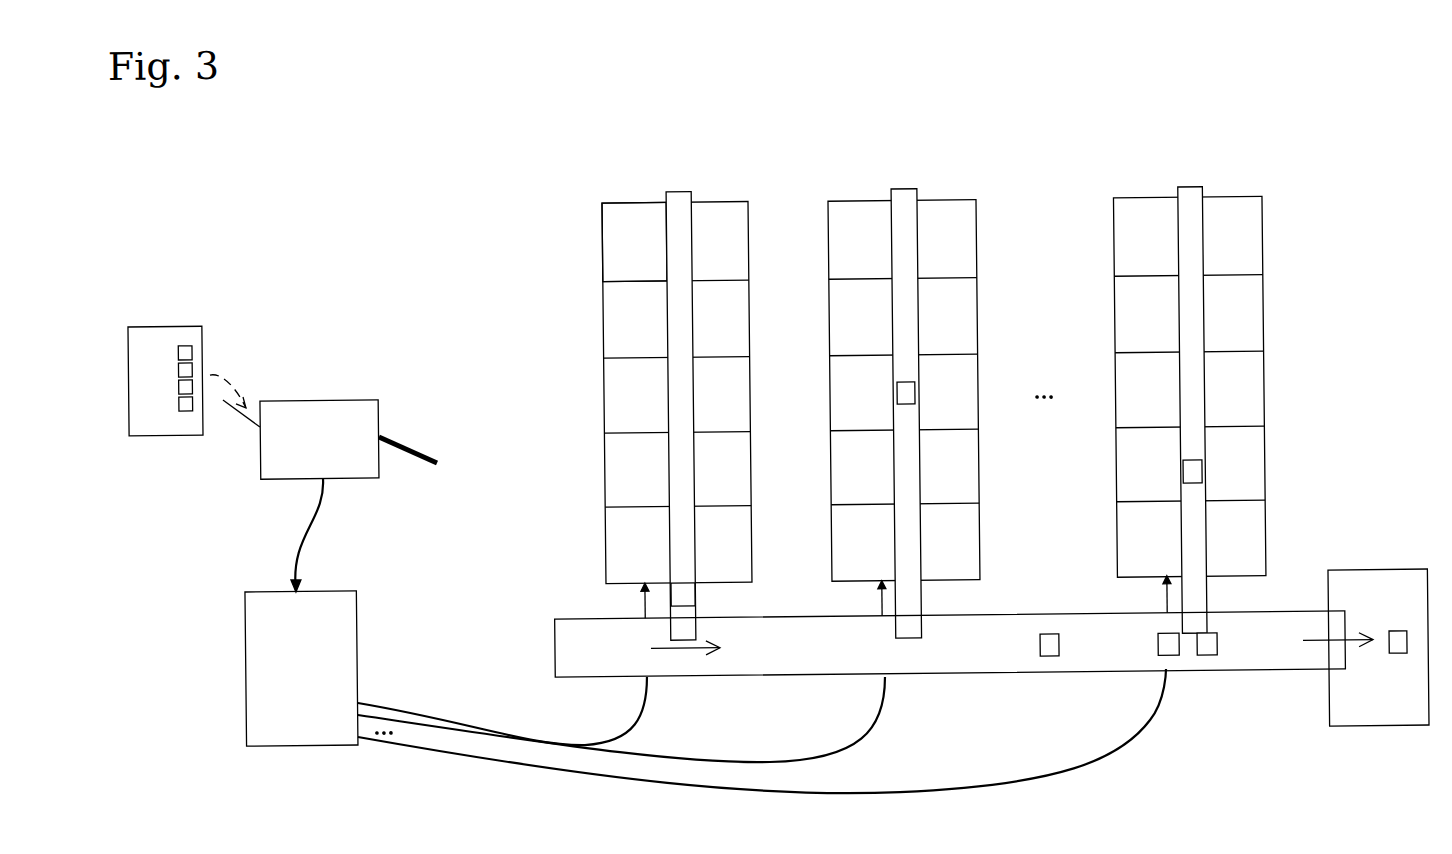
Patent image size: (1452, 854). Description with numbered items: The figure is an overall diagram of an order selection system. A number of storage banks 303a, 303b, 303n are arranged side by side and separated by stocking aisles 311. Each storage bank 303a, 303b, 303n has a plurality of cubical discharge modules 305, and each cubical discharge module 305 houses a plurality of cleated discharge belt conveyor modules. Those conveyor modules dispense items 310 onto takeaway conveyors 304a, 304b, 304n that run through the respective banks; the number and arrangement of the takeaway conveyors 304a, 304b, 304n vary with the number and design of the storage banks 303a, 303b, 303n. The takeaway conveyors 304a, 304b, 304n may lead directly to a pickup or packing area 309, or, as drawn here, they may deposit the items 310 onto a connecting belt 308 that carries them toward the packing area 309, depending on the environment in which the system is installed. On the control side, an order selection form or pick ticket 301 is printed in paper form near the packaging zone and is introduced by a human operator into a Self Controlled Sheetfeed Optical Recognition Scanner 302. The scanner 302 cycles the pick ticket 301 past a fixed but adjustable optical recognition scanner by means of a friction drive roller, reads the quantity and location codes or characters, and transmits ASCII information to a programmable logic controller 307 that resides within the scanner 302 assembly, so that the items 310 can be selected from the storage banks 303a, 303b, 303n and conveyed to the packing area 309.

The order selection form (pick ticket) 301 is at (184, 325).
The Self Controlled Sheetfeed Optical Recognition Scanner 302 is at (347, 402).
The storage bank 303a is at (650, 195).
The storage bank 303b is at (866, 196).
The storage bank 303n is at (1146, 197).
The takeaway conveyor 304a is at (677, 260).
The takeaway conveyor 304b is at (930, 193).
The takeaway conveyor 304n is at (1206, 195).
The cubical discharge module 305 is at (637, 227).
The programmable logic controller (PLC) 307 is at (262, 695).
The connecting belt 308 is at (766, 666).
The pickup or packing area 309 is at (1385, 710).
The item 310 is at (685, 597).
The stocking aisle 311 is at (590, 308).